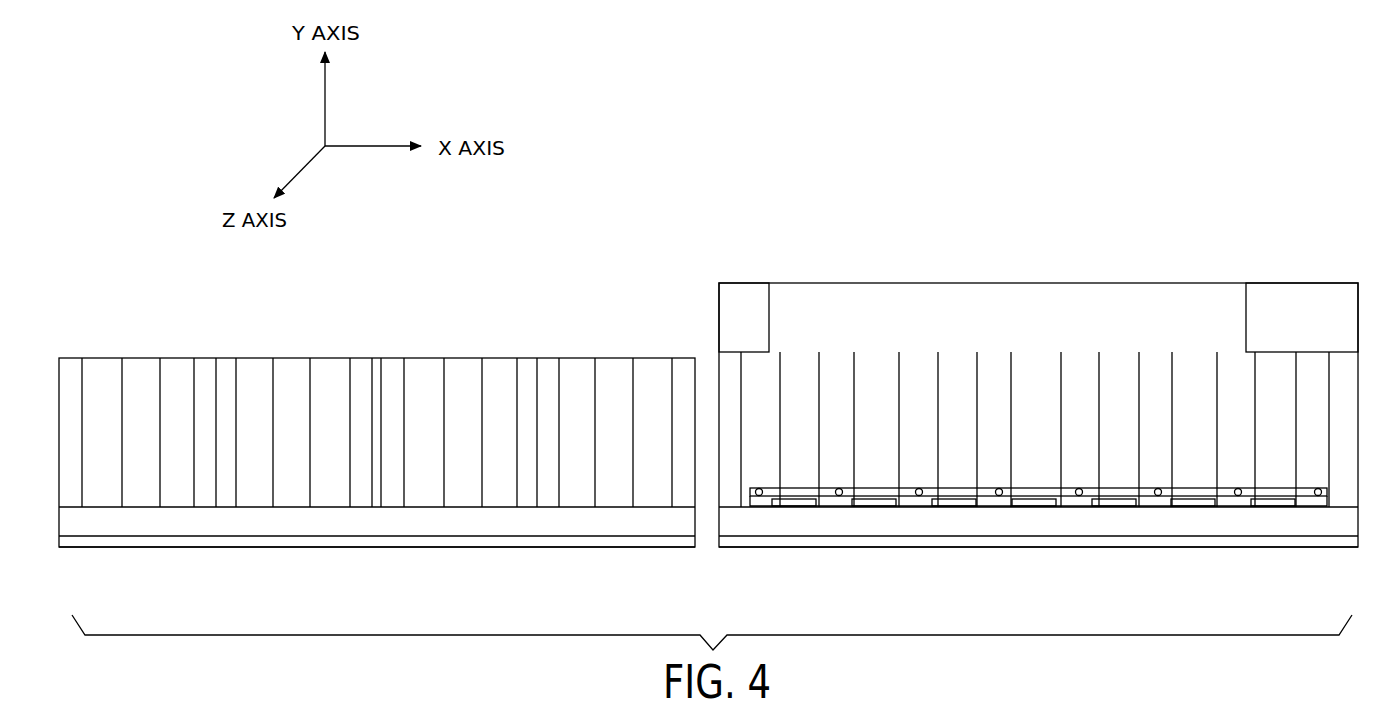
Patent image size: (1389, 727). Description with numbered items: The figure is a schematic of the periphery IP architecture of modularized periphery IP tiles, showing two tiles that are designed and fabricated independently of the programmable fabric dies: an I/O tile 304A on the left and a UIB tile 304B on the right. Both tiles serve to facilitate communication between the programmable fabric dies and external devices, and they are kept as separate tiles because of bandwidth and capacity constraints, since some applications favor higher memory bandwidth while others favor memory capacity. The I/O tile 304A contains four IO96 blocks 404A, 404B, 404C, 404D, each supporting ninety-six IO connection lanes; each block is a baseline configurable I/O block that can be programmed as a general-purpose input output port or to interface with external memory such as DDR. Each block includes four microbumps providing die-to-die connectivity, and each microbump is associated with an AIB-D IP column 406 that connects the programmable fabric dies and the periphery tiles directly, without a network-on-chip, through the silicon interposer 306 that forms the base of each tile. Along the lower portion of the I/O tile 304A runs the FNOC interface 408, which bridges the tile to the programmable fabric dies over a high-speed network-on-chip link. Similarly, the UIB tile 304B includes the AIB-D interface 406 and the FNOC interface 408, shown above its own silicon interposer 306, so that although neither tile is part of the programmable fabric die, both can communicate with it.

The I/O tile 304A is at (162, 291).
The UIB tile 304B is at (746, 255).
The IO96 block 404A is at (171, 383).
The IO96 block 404B is at (319, 383).
The IO96 block 404C is at (496, 383).
The IO96 block 404D is at (641, 383).
The AIB-D IP column 406 is at (444, 473).
The FNOC interface 408 is at (538, 526).
The silicon interposer 306 is at (137, 541).